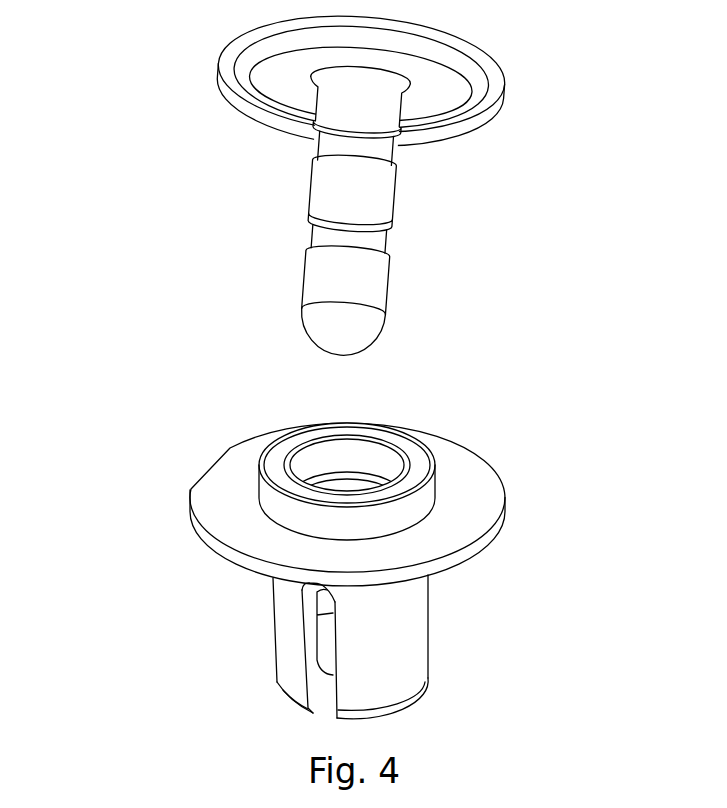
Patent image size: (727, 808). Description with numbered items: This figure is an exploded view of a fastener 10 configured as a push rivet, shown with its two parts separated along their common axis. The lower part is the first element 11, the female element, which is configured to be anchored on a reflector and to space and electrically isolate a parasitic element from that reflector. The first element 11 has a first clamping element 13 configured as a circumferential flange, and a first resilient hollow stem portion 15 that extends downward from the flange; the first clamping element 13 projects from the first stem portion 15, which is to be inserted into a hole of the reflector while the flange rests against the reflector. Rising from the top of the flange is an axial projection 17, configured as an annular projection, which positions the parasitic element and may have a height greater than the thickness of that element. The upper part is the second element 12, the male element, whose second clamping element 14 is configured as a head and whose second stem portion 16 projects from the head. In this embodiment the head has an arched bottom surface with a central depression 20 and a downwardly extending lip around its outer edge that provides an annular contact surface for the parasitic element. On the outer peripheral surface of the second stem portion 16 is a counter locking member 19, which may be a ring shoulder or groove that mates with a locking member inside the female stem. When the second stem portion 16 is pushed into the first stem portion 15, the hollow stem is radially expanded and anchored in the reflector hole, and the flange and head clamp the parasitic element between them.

The fastener 10 is at (192, 115).
The first element 11 is at (316, 557).
The second element 12 is at (350, 97).
The first clamping element 13 is at (457, 533).
The second clamping element 14 is at (492, 73).
The first stem portion 15 is at (383, 692).
The second stem portion 16 is at (355, 328).
The axial projection 17 is at (413, 448).
The counter locking member 19 is at (380, 147).
The central depression 20 is at (440, 95).